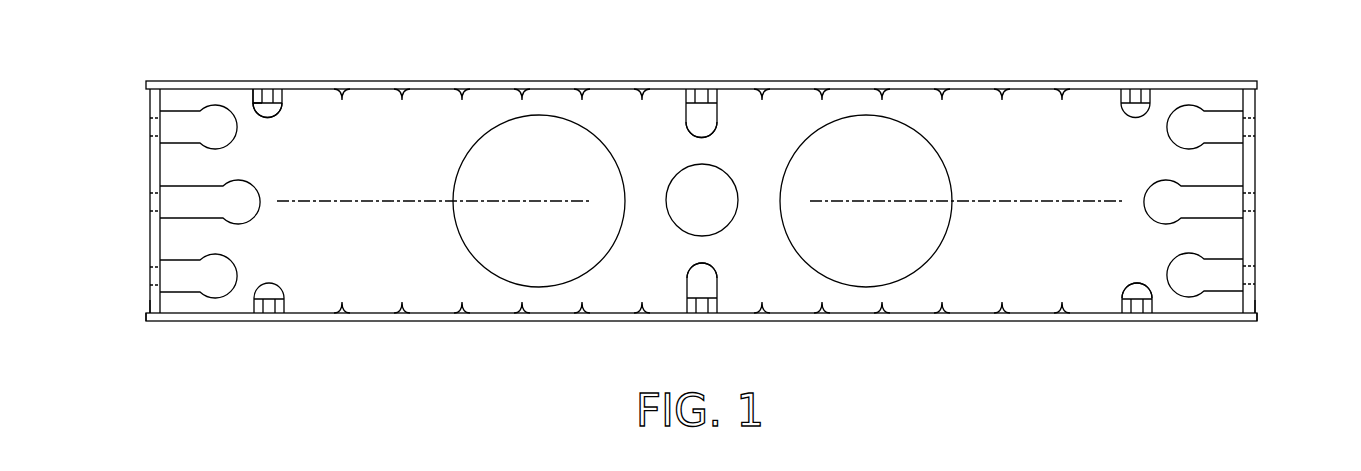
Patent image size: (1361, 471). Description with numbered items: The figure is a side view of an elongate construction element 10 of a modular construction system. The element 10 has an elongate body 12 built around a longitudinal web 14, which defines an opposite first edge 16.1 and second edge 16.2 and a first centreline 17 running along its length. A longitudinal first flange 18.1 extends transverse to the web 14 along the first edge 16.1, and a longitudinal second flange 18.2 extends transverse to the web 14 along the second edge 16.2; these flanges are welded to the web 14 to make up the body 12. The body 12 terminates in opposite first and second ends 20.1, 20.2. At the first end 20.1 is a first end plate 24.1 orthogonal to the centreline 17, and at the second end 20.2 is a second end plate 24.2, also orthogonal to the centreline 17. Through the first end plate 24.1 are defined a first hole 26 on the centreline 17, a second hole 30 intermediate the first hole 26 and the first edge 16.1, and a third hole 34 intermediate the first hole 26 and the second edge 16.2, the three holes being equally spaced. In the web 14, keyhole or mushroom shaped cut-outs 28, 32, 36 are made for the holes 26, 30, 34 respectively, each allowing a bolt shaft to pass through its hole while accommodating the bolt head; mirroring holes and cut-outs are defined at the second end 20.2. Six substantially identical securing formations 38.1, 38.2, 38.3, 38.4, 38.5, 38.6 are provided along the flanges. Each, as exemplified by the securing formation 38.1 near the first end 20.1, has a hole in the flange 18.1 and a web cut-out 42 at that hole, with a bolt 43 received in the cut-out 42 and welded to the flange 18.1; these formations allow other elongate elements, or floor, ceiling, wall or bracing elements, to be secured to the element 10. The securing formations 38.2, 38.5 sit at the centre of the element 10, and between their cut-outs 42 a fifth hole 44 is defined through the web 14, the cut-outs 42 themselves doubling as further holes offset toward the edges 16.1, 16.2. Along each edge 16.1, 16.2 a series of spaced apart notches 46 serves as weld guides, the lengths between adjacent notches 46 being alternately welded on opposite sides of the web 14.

The elongate construction element 10 is at (703, 201).
The elongate body 12 is at (701, 85).
The longitudinal web 14 is at (701, 201).
The first edge 16.1 is at (324, 91).
The second edge 16.2 is at (687, 276).
The first centreline 17 is at (539, 199).
The first flange 18.1 is at (913, 80).
The second flange 18.2 is at (916, 322).
The first end 20.1 is at (154, 324).
The second end 20.2 is at (1252, 324).
The first end plate 24.1 is at (150, 240).
The second end plate 24.2 is at (1255, 240).
The first hole 26 is at (148, 204).
The cut-out 28 is at (265, 203).
The second hole 30 is at (148, 130).
The cut-out 32 is at (234, 149).
The third hole 34 is at (148, 278).
The cut-out 36 is at (242, 271).
The securing formation 38.1 is at (274, 69).
The securing formation 38.2 is at (704, 79).
The securing formation 38.3 is at (1131, 79).
The securing formation 38.4 is at (277, 324).
The securing formation 38.5 is at (704, 324).
The securing formation 38.6 is at (1127, 324).
The web cut-out 42 is at (280, 122).
The bolt 43 is at (258, 90).
The fifth hole 44 is at (680, 231).
The notches 46 is at (405, 299).